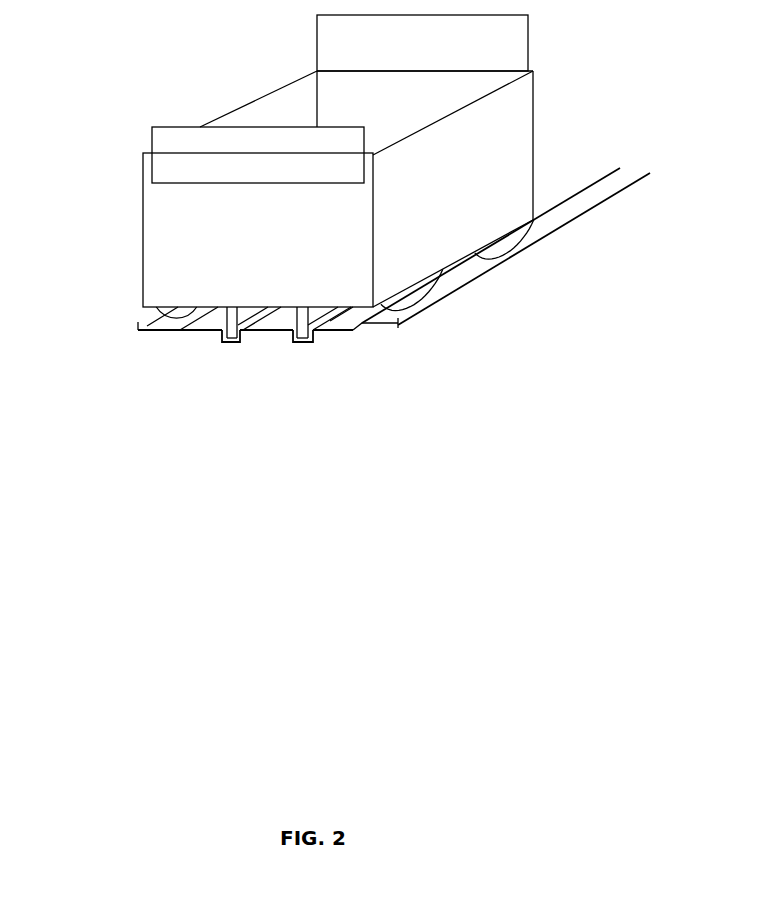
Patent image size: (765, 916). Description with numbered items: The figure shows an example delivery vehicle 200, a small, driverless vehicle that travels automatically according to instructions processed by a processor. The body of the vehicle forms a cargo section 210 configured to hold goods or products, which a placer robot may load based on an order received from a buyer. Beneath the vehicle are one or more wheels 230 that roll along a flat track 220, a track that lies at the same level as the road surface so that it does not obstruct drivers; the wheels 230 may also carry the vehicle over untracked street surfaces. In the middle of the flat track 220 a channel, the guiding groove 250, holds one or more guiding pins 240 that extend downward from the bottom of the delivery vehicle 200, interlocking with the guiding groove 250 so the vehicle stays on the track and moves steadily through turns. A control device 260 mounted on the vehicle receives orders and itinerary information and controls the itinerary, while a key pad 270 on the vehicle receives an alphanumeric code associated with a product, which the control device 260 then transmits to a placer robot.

The delivery vehicle 200 is at (338, 189).
The cargo section 210 is at (293, 105).
The flat track 220 is at (153, 325).
The wheels 230 is at (413, 295).
The guiding pin 240 is at (232, 328).
The guiding groove 250 is at (310, 342).
The control device 260 is at (422, 43).
The key pad 270 is at (258, 155).